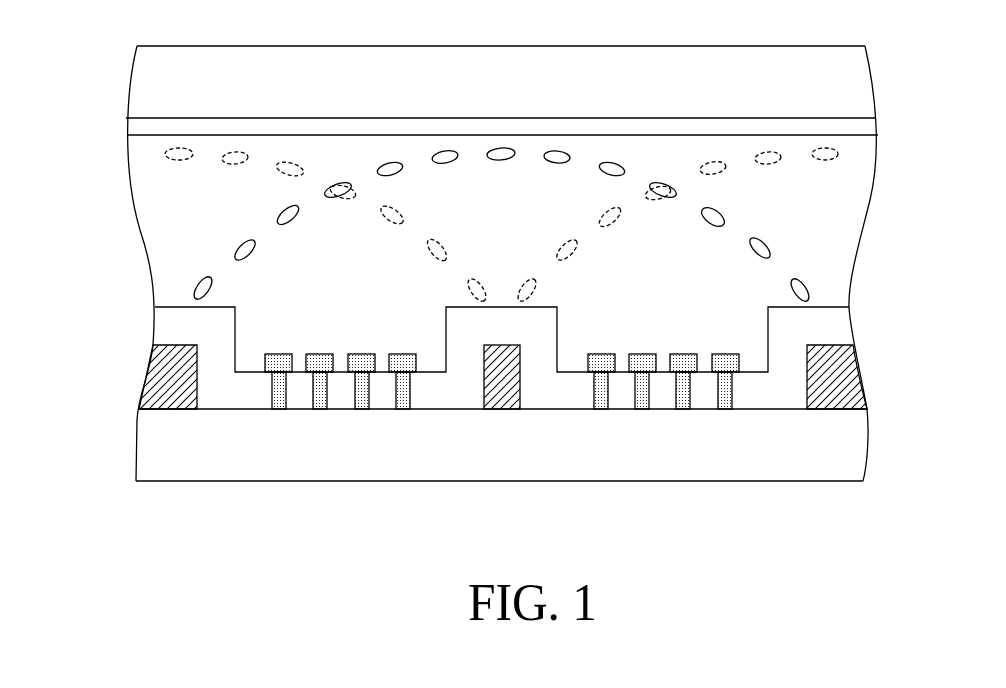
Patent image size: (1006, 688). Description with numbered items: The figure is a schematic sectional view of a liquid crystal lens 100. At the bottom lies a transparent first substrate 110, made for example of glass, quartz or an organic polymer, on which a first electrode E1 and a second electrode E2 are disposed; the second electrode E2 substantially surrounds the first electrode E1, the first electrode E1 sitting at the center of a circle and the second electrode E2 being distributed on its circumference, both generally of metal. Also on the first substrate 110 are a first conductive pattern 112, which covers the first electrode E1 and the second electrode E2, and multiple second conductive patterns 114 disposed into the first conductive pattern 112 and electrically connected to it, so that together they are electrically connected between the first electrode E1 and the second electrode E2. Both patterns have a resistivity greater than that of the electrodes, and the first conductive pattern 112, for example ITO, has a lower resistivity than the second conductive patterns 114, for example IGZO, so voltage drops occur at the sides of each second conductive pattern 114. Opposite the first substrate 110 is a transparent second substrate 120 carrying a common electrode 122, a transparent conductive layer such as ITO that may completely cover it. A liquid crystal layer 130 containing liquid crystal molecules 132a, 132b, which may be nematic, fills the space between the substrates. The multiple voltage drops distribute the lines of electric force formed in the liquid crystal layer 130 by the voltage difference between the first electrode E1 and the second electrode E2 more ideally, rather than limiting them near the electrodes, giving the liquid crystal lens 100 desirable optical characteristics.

The liquid crystal lens 100 is at (985, 552).
The first substrate 110 is at (843, 458).
The first conductive pattern 112 is at (252, 395).
The second conductive patterns 114 is at (403, 356).
The second substrate 120 is at (862, 80).
The common electrode 122 is at (862, 130).
The liquid crystal layer 130 is at (847, 227).
The liquid crystal molecules 132a is at (837, 152).
The liquid crystal molecules 132b is at (808, 283).
The first electrode E1 is at (498, 400).
The second electrode E2 is at (143, 380).